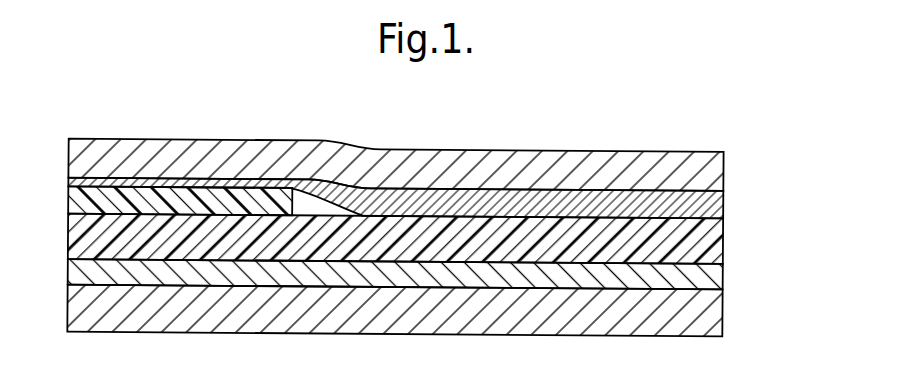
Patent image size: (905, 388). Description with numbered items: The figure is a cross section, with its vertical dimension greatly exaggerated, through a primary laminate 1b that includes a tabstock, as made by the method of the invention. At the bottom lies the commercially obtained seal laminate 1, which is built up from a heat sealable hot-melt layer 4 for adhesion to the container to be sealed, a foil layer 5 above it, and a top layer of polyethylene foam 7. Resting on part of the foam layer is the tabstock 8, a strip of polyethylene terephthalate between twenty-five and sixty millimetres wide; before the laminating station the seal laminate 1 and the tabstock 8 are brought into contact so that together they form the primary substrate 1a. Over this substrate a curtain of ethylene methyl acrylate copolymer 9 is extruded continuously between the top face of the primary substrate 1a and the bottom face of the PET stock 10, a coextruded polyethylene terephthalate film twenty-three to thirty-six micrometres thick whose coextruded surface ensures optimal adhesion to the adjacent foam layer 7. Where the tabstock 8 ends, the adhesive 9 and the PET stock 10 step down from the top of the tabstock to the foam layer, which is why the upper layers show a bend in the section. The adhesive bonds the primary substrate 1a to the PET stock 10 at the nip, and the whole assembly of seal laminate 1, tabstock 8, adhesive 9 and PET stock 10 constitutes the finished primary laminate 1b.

The seal laminate 1 is at (772, 218).
The primary substrate 1a is at (62, 188).
The primary laminate 1b is at (817, 128).
The heat sealable (hot-melt) layer 4 is at (716, 312).
The foil layer 5 is at (710, 272).
The top layer of polyethylene foam 7 is at (716, 238).
The tabstock 8 is at (90, 196).
The ethylene methyl acrylate copolymer 9 is at (707, 202).
The PET stock 10 is at (716, 162).